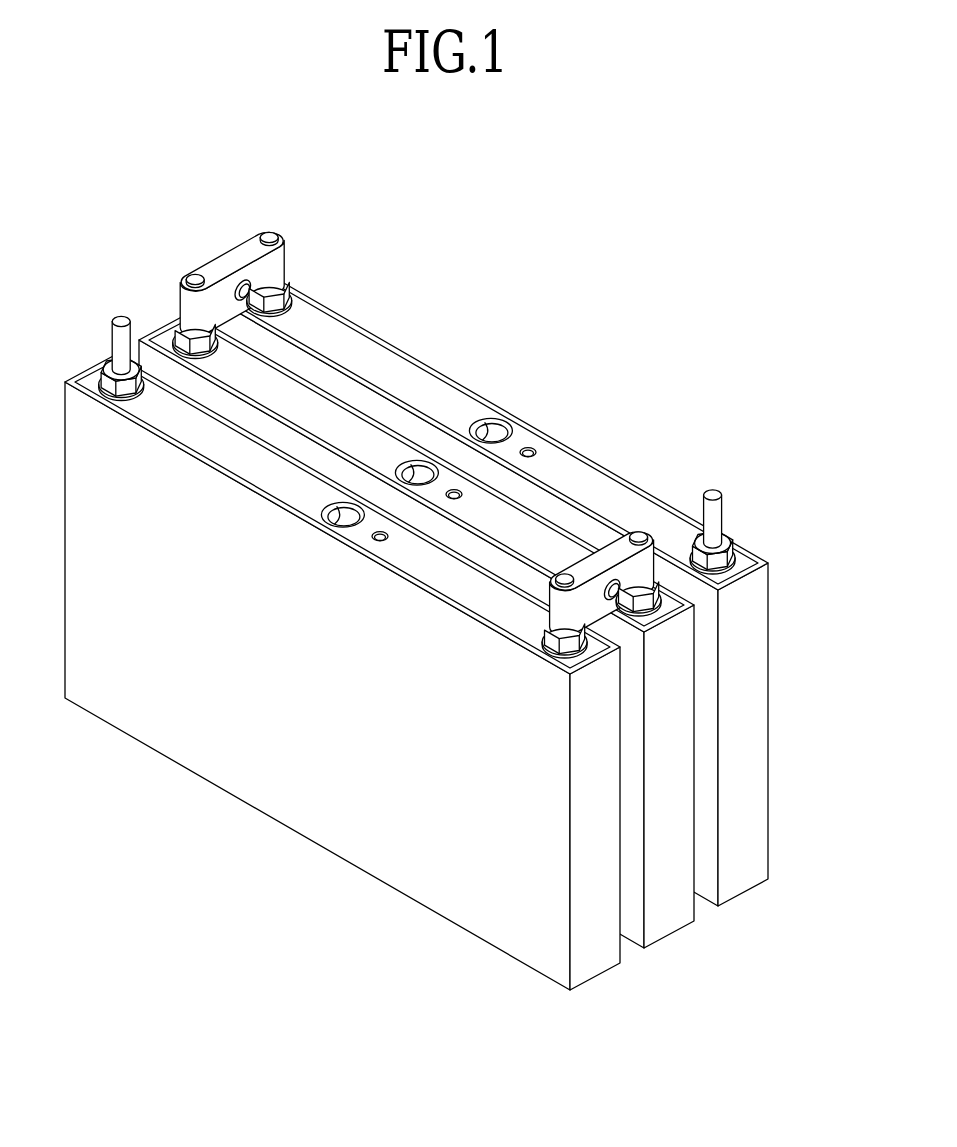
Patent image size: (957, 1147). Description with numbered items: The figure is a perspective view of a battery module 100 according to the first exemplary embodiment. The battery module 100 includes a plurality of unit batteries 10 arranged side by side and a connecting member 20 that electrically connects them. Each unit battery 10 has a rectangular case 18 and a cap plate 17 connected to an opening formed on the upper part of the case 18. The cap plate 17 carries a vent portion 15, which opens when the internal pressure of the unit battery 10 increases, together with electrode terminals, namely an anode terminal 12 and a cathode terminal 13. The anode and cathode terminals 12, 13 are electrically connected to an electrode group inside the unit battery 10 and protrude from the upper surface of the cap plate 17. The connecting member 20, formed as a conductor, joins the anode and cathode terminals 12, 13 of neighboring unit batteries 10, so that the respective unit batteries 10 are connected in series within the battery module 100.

The battery module 100 is at (480, 284).
The unit battery 10 is at (460, 657).
The anode terminal 12 is at (121, 319).
The cathode terminal 13 is at (192, 277).
The vent portion 15 is at (492, 421).
The cap plate 17 is at (550, 463).
The case 18 is at (752, 660).
The connecting member 20 is at (231, 252).